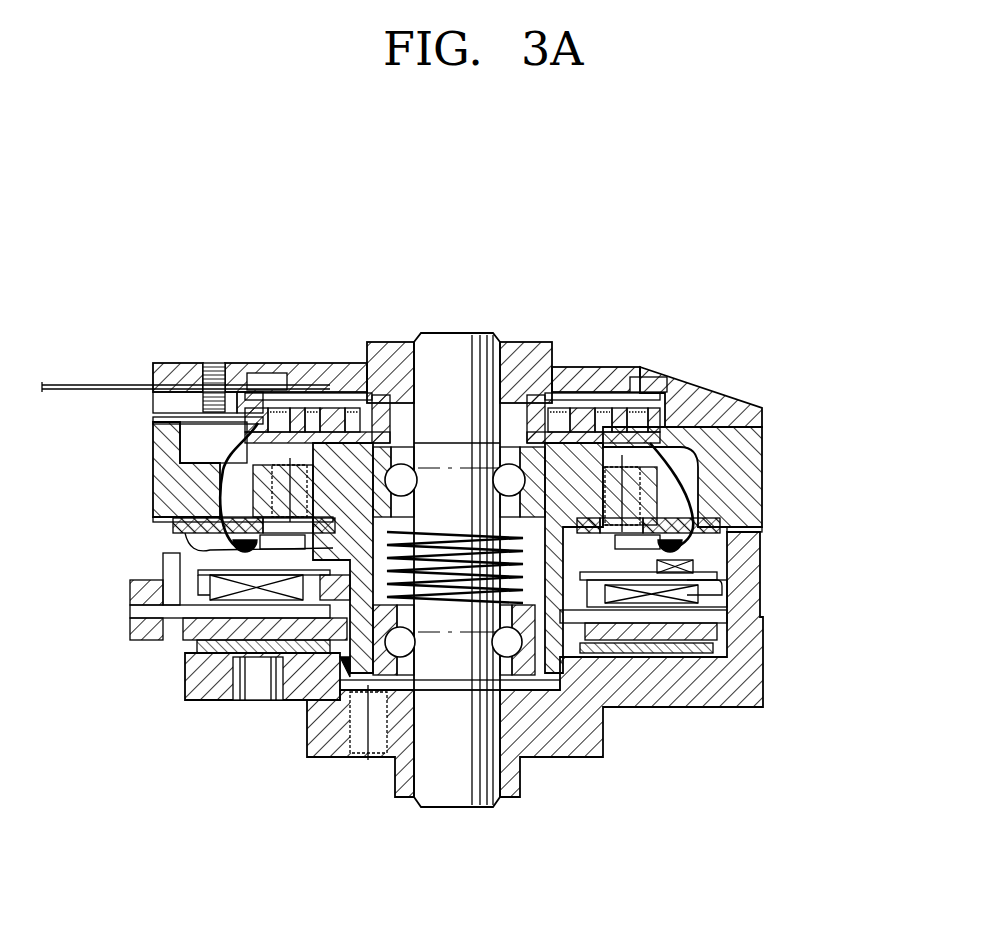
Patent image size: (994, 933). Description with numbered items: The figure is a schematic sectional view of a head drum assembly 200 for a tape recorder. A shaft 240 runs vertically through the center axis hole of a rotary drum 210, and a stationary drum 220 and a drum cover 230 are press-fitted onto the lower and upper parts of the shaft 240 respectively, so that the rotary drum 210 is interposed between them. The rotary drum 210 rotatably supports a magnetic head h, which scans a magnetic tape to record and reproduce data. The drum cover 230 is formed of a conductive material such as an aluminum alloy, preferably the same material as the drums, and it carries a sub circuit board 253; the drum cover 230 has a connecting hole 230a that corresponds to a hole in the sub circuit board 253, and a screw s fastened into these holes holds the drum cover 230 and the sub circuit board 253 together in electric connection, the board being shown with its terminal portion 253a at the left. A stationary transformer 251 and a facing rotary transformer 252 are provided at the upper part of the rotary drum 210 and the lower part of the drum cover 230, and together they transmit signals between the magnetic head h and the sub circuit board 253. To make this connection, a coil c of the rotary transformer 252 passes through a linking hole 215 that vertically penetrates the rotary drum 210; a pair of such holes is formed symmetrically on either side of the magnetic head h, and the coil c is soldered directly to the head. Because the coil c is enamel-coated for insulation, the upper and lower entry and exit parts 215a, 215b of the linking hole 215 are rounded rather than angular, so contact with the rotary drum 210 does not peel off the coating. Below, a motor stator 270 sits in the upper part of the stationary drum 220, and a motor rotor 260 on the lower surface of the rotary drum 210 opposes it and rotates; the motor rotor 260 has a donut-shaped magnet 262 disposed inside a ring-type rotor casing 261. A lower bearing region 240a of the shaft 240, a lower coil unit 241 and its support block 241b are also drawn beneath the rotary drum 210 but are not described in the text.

The head drum assembly 200 is at (472, 265).
The shaft 240 is at (465, 346).
The drum cover 230 is at (722, 380).
The connecting hole 230a is at (213, 363).
The sub circuit board 253 is at (95, 385).
The wire terminal block 253a is at (174, 363).
The screw s is at (195, 398).
The coil c is at (215, 450).
The upper entry/exit part 215a is at (205, 472).
The linking hole 215 is at (215, 497).
The lower entry/exit part 215b is at (190, 520).
The magnet 240a is at (220, 545).
The lower coil unit 241 is at (175, 640).
The coil support block 241b is at (285, 668).
The stationary transformer 251 is at (672, 398).
The rotary transformer 252 is at (670, 445).
The rotary drum 210 is at (770, 478).
The magnetic head h is at (762, 530).
The rotor casing 261 is at (723, 587).
The magnet 262 is at (688, 590).
The motor rotor 260 is at (838, 602).
The motor stator 270 is at (688, 618).
The stationary drum 220 is at (770, 660).